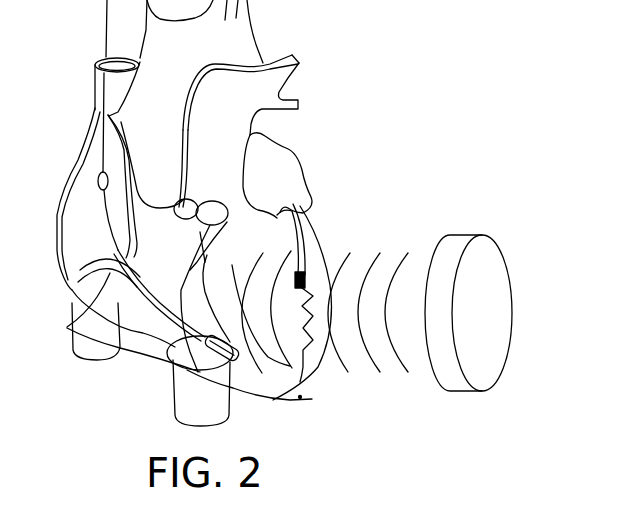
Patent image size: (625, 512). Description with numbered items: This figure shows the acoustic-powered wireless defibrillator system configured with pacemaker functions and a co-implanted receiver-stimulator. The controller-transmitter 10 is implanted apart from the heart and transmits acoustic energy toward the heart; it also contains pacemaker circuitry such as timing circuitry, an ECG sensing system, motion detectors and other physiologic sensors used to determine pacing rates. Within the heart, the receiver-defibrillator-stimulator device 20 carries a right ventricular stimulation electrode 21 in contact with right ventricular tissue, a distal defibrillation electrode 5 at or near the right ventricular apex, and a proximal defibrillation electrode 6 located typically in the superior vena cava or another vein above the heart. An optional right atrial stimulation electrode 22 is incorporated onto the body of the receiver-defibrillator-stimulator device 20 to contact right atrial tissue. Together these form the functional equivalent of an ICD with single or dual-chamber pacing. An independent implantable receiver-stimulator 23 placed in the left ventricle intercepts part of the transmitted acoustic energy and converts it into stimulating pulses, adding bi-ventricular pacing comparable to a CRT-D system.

The proximal defibrillation electrode 6 is at (100, 0).
The right atrial stimulation electrode 22 is at (98, 178).
The receiver-defibrillator-stimulator device 20 is at (67, 327).
The distal defibrillation electrode 5 is at (205, 338).
The right ventricular stimulation electrode 21 is at (300, 397).
The implantable receiver-stimulator 23 is at (305, 265).
The controller-transmitter 10 is at (482, 235).